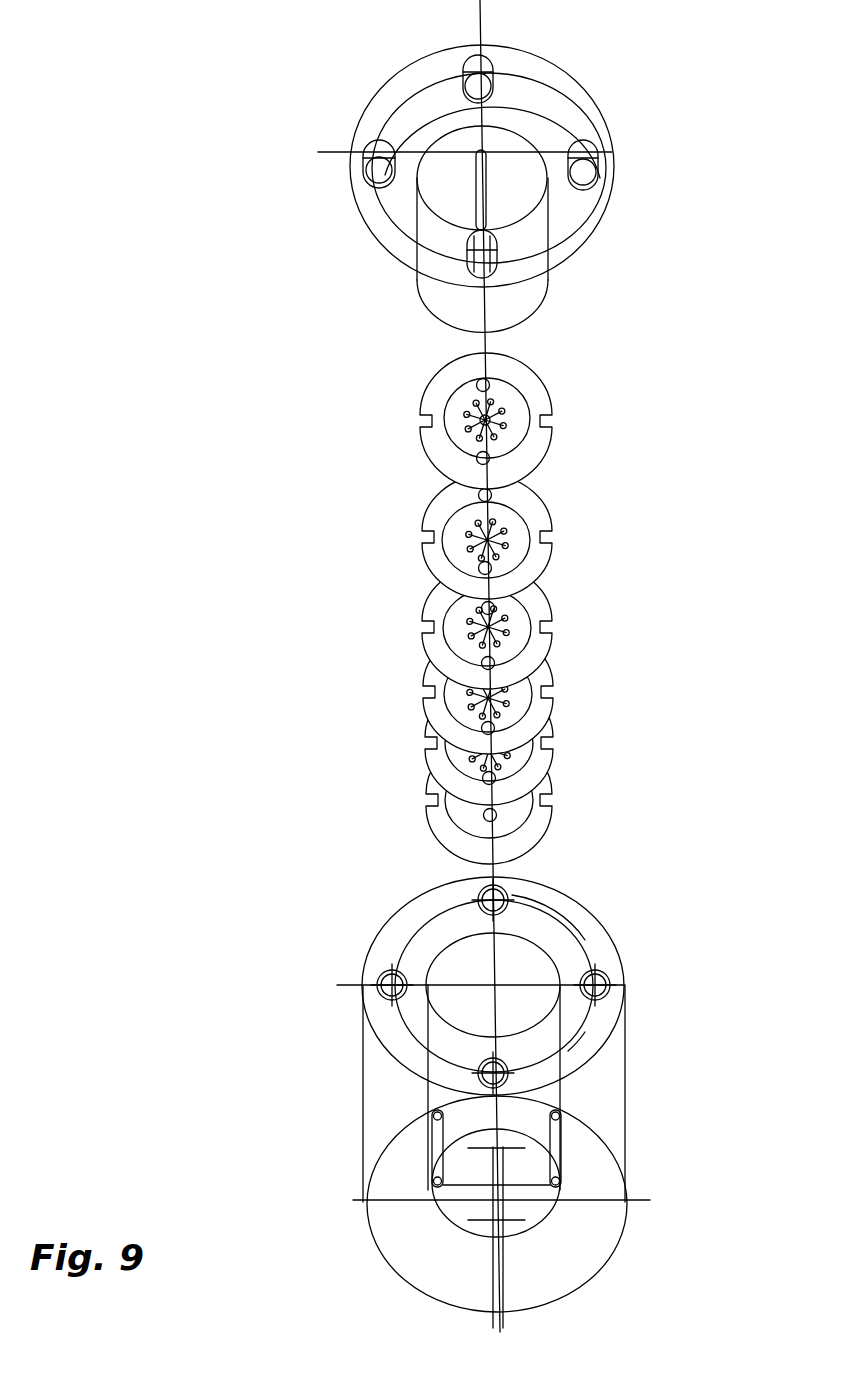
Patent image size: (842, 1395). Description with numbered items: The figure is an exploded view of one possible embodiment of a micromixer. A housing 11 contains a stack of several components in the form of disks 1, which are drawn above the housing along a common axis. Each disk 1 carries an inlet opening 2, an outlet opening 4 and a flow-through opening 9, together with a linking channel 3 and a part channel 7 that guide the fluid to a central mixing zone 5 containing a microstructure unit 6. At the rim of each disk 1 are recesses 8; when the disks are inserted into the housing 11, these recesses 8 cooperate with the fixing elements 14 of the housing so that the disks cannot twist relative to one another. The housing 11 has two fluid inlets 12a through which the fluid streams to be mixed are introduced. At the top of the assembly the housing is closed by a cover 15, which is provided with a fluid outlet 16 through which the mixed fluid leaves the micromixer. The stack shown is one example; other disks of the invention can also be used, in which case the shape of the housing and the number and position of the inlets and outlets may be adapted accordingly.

The disk 1 is at (532, 392).
The inlet opening 2 is at (478, 383).
The linking channel 3 is at (513, 440).
The outlet opening 4 is at (492, 537).
The mixing zone 5 is at (467, 412).
The microstructure unit 6 is at (504, 430).
The part channel 7 is at (478, 538).
The recess 8 is at (550, 688).
The flow-through opening 9 is at (470, 463).
The housing 11 is at (610, 1077).
The fluid inlet 12a is at (432, 1187).
The fixing element 14 is at (430, 1145).
The cover 15 is at (555, 118).
The fluid outlet 16 is at (500, 207).